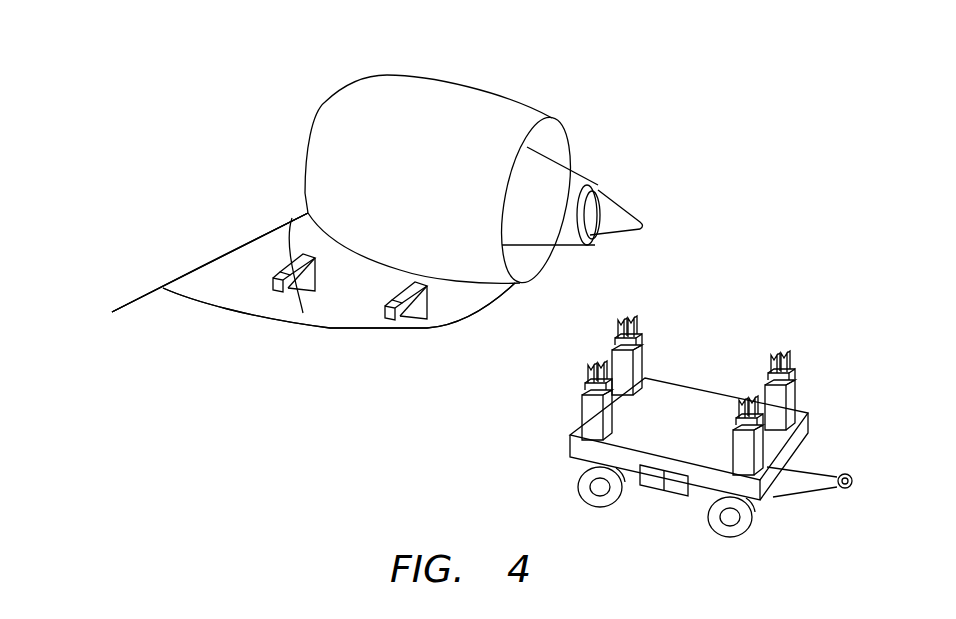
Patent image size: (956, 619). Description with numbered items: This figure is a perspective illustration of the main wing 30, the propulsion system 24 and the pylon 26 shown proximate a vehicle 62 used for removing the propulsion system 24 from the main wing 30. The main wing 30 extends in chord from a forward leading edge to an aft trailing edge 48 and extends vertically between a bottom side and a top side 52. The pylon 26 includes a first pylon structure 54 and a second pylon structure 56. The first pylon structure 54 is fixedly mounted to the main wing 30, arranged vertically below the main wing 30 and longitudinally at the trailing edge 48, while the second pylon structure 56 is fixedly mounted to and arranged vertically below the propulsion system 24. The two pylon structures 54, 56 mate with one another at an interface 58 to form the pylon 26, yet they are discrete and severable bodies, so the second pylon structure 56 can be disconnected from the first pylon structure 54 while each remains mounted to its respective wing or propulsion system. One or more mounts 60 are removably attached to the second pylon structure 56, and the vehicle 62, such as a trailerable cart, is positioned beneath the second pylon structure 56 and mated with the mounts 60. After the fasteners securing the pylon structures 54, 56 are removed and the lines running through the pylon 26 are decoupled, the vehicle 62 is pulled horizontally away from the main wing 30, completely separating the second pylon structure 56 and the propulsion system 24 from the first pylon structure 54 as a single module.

The propulsion system 24 is at (467, 84).
The pylon 26 is at (219, 306).
The main wing 30 is at (130, 309).
The trailing edge 48 is at (150, 294).
The top side 52 is at (172, 241).
The first pylon structure 54 is at (250, 311).
The second pylon structure 56 is at (370, 331).
The interface 58 is at (303, 313).
The mounts 60 is at (282, 273).
The vehicle 62 is at (820, 396).